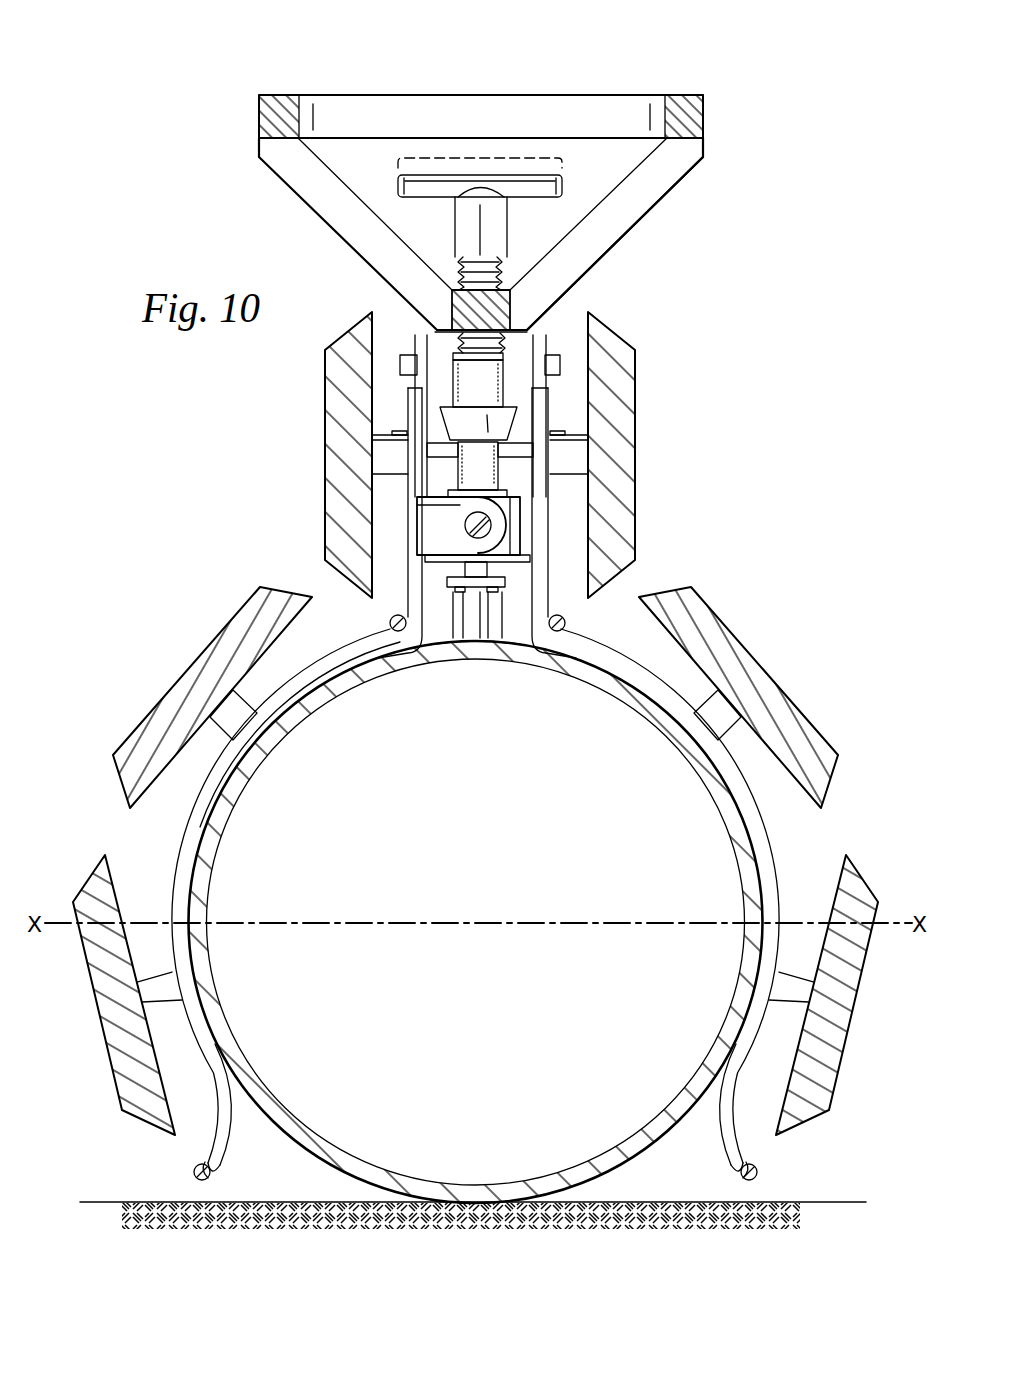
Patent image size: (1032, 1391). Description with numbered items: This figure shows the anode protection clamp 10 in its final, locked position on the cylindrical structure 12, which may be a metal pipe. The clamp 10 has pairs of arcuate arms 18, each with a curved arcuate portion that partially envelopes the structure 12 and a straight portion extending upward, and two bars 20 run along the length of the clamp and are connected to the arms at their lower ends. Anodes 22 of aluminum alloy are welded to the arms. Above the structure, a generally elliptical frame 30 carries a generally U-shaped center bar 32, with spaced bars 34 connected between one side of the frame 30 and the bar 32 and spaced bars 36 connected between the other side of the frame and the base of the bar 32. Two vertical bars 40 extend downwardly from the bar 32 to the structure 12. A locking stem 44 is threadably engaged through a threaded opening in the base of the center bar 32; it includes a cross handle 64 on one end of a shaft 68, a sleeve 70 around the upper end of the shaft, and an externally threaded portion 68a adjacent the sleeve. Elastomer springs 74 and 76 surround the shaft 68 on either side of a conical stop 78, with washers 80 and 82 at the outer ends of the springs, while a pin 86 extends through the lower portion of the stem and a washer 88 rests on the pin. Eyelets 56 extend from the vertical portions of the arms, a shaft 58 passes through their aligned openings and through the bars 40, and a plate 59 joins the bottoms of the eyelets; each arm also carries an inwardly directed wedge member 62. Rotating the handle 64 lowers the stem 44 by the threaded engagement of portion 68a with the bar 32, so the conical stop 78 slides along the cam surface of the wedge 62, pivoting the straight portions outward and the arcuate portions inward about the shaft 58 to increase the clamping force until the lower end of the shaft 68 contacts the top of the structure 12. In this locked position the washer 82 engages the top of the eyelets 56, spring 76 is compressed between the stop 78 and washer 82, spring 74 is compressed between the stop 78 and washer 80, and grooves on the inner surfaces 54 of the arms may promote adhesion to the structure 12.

The anode protection clamp 10 is at (792, 258).
The cylindrical structure 12 is at (368, 1170).
The arcuate arms 18 is at (236, 1152).
The bars 20 is at (398, 633).
The anodes 22 is at (340, 422).
The frame 30 is at (364, 86).
The center bar 32 is at (500, 300).
The spaced bars 34 is at (694, 162).
The spaced bars 36 is at (305, 202).
The vertical bars 40 is at (472, 640).
The stems 44 is at (580, 188).
The inner surfaces 54 is at (233, 1046).
The eyelets 56 is at (522, 503).
The shaft 58 is at (425, 535).
The plate 59 is at (548, 540).
The wedge member 62 is at (560, 430).
The cross handle 64 is at (405, 182).
The shaft 68 is at (490, 640).
The threaded portion 68a is at (495, 274).
The sleeve 70 is at (462, 226).
The elastomer spring 74 is at (523, 418).
The elastomer spring 76 is at (470, 463).
The conical stop 78 is at (457, 418).
The washer 80 is at (455, 352).
The washer 82 is at (430, 490).
The pin 86 is at (503, 642).
The washer 88 is at (560, 590).